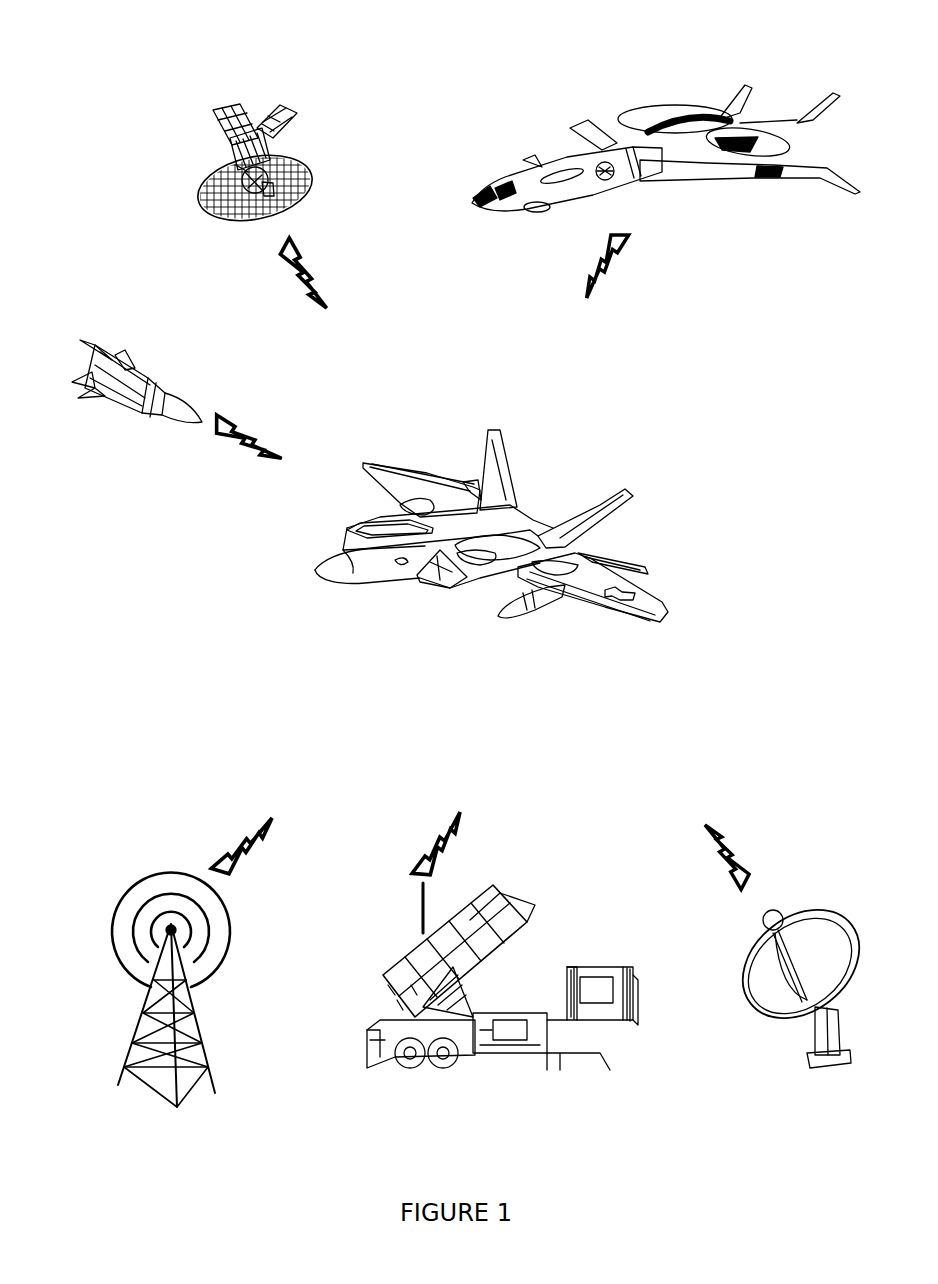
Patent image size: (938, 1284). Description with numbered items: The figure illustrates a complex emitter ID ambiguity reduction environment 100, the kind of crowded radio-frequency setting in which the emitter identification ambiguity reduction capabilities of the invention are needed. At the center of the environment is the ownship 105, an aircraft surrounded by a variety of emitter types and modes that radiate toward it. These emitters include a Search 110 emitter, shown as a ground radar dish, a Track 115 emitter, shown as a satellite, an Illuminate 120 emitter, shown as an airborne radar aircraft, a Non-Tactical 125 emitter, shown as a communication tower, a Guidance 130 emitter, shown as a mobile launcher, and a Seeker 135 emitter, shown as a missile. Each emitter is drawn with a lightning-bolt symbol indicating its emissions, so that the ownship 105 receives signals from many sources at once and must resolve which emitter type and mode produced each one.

The emitter ID ambiguity reduction environment 100 is at (63, 34).
The ownship 105 is at (491, 535).
The Search emitter 110 is at (790, 944).
The Track emitter 115 is at (260, 208).
The Illuminate emitter 120 is at (666, 193).
The Non-Tactical emitter 125 is at (195, 959).
The Guidance emitter 130 is at (502, 939).
The Seeker emitter 135 is at (178, 403).